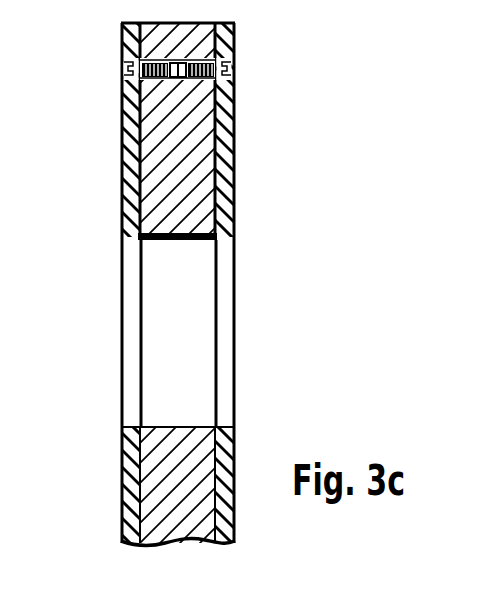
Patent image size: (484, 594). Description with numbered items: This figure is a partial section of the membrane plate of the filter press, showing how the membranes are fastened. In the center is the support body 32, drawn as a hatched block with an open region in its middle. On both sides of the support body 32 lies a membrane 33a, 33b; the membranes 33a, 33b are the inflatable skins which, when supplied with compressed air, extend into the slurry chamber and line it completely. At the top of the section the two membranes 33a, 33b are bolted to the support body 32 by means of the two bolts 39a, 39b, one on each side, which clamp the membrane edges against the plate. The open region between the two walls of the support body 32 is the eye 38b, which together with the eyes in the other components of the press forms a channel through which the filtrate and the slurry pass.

The support body 32 is at (173, 514).
The membrane 33a is at (128, 185).
The membrane 33b is at (233, 188).
The eye 38b is at (192, 328).
The bolt 39a is at (122, 60).
The bolt 39b is at (233, 77).